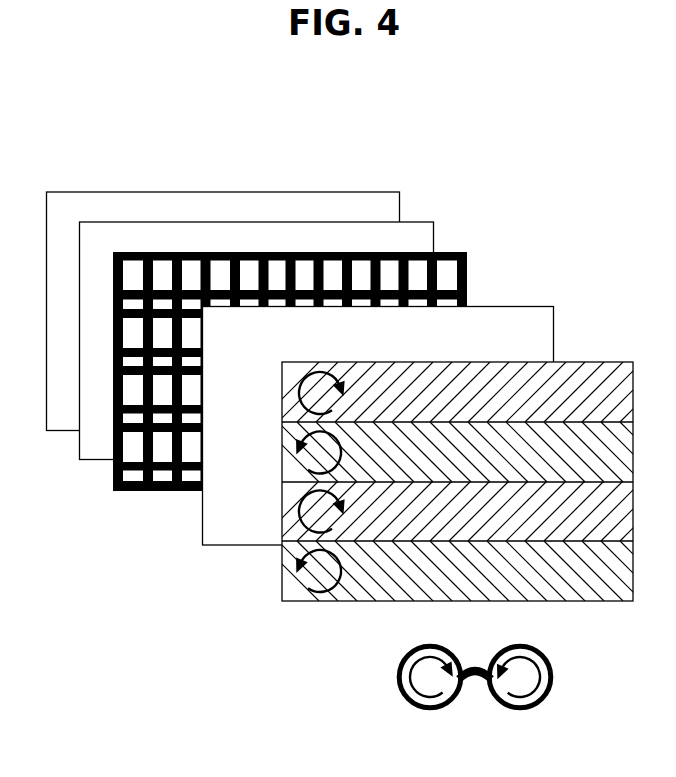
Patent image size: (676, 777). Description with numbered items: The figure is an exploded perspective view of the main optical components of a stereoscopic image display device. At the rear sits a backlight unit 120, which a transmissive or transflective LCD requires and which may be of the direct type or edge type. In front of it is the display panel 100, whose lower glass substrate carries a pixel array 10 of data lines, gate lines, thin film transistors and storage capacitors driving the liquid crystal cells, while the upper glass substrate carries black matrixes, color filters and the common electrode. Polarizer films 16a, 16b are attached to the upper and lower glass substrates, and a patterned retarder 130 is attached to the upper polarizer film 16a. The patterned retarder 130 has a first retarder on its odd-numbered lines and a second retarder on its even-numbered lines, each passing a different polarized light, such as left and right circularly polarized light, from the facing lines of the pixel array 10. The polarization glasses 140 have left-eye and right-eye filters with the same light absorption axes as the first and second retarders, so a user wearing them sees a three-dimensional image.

The display panel 100 is at (572, 241).
The pixel array 10 is at (457, 251).
The upper polarizer film 16a is at (517, 304).
The lower polarizer film 16b is at (417, 221).
The backlight unit 120 is at (388, 192).
The patterned retarder 130 is at (595, 361).
The polarization glasses 140 is at (546, 651).